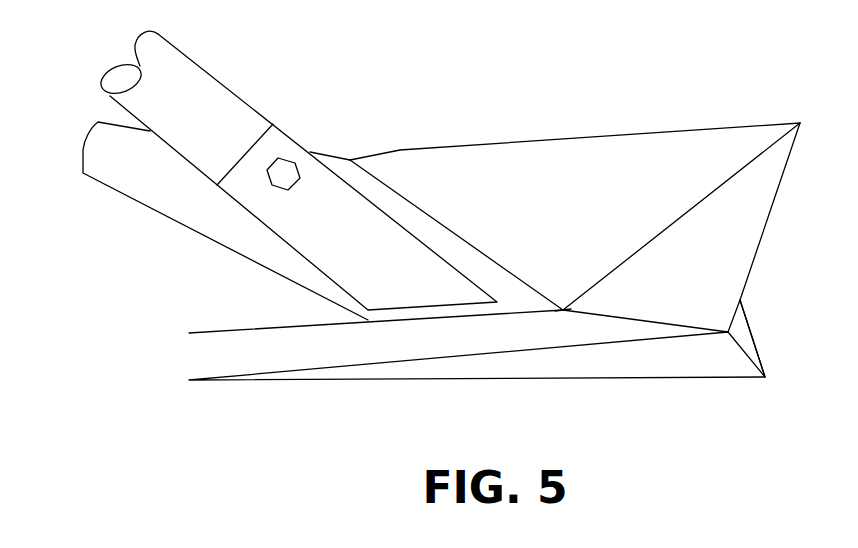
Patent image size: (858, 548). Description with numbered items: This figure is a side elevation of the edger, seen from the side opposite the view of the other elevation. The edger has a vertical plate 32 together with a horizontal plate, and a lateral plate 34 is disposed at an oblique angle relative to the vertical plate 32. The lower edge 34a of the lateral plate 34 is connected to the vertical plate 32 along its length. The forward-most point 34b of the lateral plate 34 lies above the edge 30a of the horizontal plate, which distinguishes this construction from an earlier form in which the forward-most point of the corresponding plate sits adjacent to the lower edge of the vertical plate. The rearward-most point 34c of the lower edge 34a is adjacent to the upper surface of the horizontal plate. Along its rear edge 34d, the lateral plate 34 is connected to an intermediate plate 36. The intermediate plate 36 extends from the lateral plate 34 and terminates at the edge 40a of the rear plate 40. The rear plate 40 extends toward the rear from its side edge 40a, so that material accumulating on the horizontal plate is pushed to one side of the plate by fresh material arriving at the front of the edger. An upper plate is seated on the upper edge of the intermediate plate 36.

The edge 30a is at (750, 373).
The vertical plate 32 is at (720, 360).
The lateral plate 34 is at (748, 222).
The lower edge 34a is at (687, 327).
The forward-most point 34b is at (738, 333).
The rearward-most point 34c is at (565, 312).
The rear edge 34d is at (713, 190).
The intermediate plate 36 is at (575, 167).
The rear plate 40 is at (208, 217).
The edge 40a is at (380, 183).